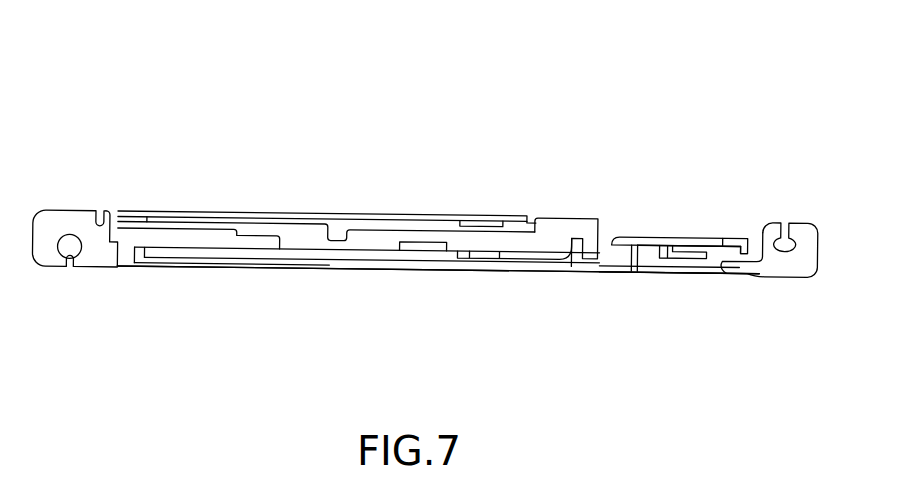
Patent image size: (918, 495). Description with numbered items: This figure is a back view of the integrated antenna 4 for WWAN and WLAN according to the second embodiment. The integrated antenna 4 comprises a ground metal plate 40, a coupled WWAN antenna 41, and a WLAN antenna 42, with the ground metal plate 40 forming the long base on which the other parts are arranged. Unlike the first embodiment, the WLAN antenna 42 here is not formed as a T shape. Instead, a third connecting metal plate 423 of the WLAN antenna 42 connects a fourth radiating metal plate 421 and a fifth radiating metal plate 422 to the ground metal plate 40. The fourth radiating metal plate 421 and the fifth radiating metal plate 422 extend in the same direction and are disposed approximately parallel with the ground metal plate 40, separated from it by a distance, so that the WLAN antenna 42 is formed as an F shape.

The integrated antenna 4 is at (803, 134).
The ground metal plate 40 is at (402, 271).
The coupled WWAN antenna 41 is at (170, 200).
The WLAN antenna 42 is at (680, 203).
The fourth radiating metal plate 421 is at (689, 262).
The fifth radiating metal plate 422 is at (723, 240).
The third connecting metal plate 423 is at (627, 259).